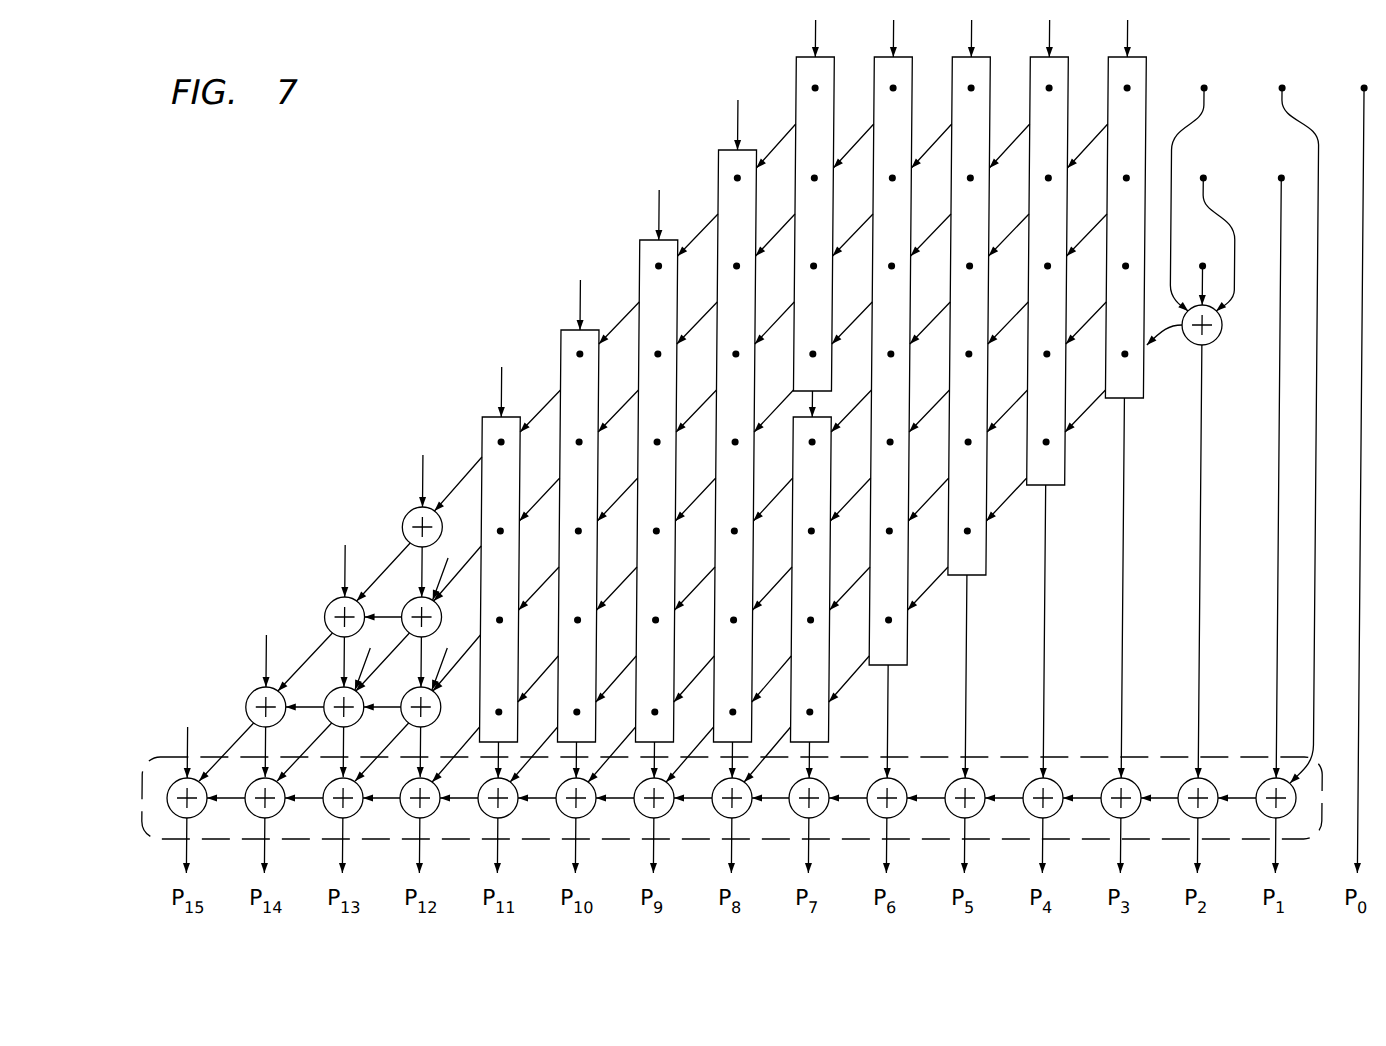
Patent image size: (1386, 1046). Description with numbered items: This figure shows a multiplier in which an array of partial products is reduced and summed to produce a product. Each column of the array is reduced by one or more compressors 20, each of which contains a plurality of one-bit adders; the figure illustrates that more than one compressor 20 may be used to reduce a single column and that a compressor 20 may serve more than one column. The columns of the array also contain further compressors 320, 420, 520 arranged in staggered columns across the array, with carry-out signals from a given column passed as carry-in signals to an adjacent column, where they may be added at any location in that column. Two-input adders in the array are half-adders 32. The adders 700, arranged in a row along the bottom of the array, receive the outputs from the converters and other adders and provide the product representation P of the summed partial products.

The compressor 20 is at (480, 426).
The multiplier cell column 320 is at (557, 342).
The multiplier cell column 420 is at (635, 252).
The multiplier cell column 520 is at (713, 162).
The adders 700 is at (1004, 757).
The half-adders 32 is at (1060, 782).